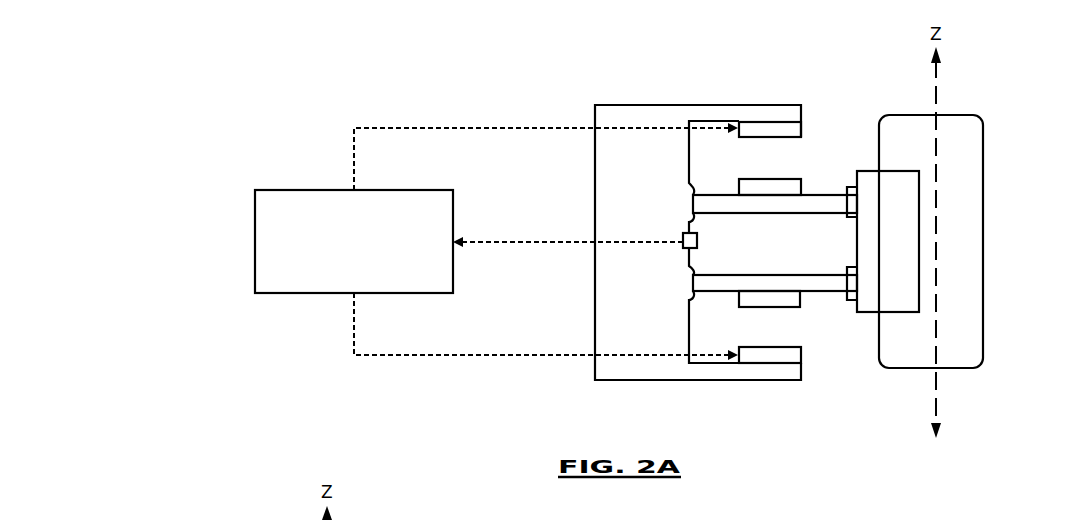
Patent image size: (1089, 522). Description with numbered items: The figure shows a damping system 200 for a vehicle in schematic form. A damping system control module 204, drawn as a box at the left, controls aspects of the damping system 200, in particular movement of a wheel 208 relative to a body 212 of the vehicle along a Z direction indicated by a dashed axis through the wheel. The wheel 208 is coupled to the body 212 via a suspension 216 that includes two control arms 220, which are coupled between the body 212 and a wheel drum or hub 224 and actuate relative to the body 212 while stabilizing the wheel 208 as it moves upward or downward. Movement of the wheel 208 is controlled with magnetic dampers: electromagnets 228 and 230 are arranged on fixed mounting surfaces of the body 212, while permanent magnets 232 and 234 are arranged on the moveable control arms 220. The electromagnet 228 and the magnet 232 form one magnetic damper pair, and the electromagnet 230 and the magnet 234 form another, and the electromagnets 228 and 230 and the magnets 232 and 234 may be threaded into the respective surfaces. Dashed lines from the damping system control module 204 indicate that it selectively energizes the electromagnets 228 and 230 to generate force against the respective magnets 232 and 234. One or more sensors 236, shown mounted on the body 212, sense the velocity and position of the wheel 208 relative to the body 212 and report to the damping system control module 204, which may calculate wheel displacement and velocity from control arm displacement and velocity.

The damping system 200 is at (307, 80).
The damping system control module 204 is at (255, 242).
The wheel 208 is at (983, 165).
The body 212 is at (638, 103).
The suspension 216 is at (851, 110).
The control arms 220 is at (808, 275).
The wheel drum or hub 224 is at (919, 243).
The electromagnet 228 is at (802, 352).
The electromagnet 230 is at (802, 128).
The permanent magnet 232 is at (770, 307).
The permanent magnet 234 is at (768, 179).
The sensors 236 is at (690, 222).